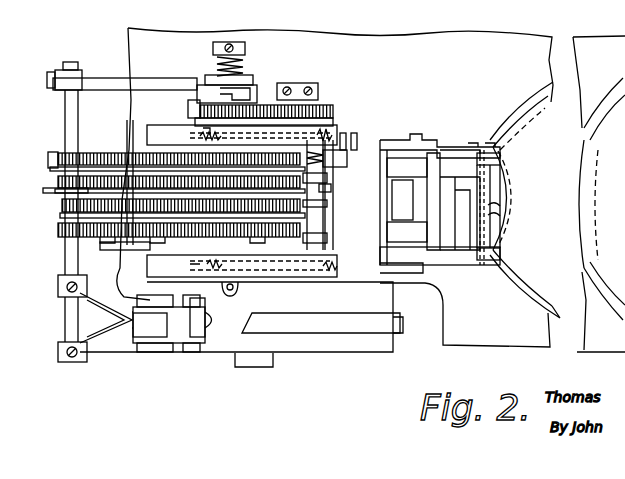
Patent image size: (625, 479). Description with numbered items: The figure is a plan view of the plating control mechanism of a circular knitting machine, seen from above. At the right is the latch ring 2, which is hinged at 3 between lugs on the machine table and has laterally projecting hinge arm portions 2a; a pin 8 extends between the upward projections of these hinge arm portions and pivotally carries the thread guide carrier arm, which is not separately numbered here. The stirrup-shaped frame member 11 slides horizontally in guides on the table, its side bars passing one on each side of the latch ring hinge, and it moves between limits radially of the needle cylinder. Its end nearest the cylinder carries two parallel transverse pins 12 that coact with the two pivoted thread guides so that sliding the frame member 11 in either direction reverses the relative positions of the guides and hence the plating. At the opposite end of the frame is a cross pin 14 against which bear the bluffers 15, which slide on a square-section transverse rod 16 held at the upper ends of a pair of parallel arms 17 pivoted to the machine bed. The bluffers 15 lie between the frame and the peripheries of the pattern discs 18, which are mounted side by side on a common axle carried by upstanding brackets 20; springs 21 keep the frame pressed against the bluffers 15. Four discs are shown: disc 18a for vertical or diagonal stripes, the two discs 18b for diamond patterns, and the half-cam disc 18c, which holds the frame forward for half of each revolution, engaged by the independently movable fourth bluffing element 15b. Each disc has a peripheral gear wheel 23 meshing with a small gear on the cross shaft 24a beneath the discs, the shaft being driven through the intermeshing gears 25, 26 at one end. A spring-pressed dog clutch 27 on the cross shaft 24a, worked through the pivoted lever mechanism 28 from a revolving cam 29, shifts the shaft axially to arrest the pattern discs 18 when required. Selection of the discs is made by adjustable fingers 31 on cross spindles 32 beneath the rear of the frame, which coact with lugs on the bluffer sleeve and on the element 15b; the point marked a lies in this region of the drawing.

The latch ring 2 is at (540, 113).
The hinge arm portions 2a is at (458, 153).
The hinge 3 is at (402, 200).
The pin 8 is at (443, 200).
The frame member 11 is at (399, 140).
The transverse pins 12 is at (493, 213).
The cross pin 14 is at (322, 223).
The bluffers 15 is at (320, 193).
The fourth bluffing element 15b is at (306, 283).
The transverse rod 16 is at (407, 232).
The parallel arms 17 is at (291, 150).
The pattern discs 18 is at (101, 154).
The first pattern disc 18a is at (50, 160).
The second pattern discs 18b is at (51, 198).
The fourth pattern disc 18c is at (147, 248).
The upstanding brackets 20 is at (242, 201).
The springs 21 is at (204, 128).
The peripheral gear wheel 23 is at (131, 160).
The cross shaft 24a is at (226, 40).
The gear 25 is at (326, 105).
The gear 26 is at (194, 108).
The spring-pressed dog clutch 27 is at (242, 90).
The pivoted lever mechanism 28 is at (103, 82).
The revolving cam 29 is at (210, 340).
The adjustable fingers 31 is at (337, 178).
The cross spindles 32 is at (344, 168).
The contact a is at (331, 188).